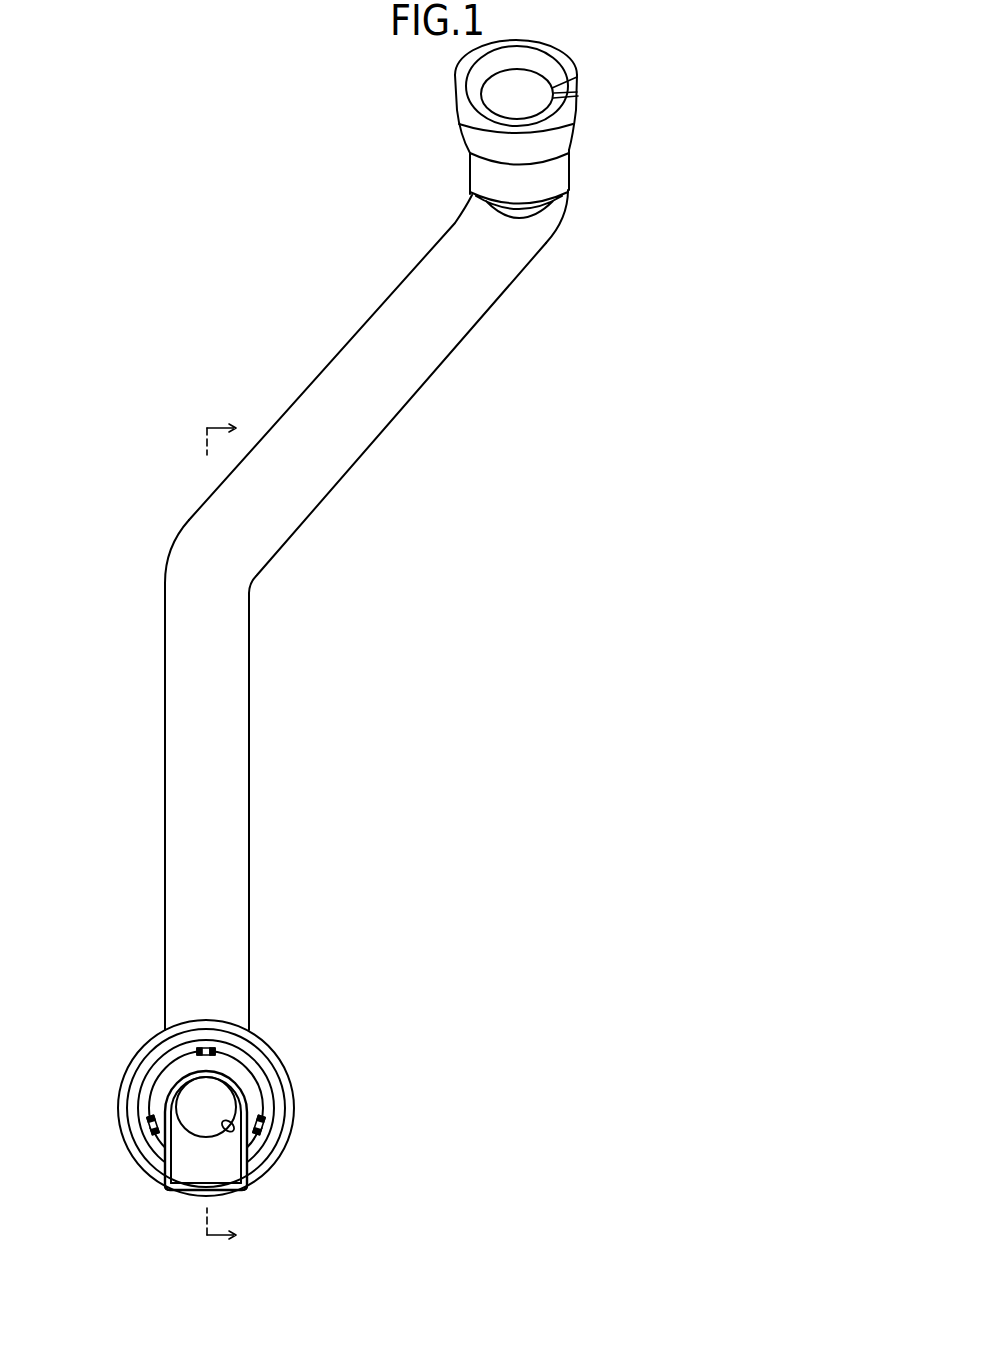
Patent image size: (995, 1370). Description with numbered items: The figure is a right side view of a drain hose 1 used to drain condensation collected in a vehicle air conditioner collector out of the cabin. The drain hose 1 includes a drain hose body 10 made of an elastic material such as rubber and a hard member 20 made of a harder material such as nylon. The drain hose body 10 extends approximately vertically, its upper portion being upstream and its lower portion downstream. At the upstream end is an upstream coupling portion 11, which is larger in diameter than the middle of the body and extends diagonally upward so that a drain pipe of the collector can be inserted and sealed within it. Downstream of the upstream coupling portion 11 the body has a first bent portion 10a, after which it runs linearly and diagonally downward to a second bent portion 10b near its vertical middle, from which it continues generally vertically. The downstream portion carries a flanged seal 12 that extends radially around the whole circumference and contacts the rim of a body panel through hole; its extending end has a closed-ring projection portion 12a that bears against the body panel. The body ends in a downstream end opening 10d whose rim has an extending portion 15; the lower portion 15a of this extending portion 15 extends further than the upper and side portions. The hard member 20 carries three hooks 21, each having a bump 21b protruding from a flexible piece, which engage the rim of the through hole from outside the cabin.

The drain hose 1 is at (360, 230).
The drain hose body 10 is at (375, 438).
The first bent portion 10a is at (557, 228).
The second bent portion 10b is at (170, 554).
The downstream end opening 10d is at (222, 1128).
The upstream coupling portion 11 is at (557, 168).
The seal 12 is at (290, 1138).
The projection portion 12a is at (288, 1090).
The extending portion 15 is at (233, 1073).
The lower portion 15a is at (188, 1170).
The hard member 20 is at (257, 1067).
The hook 21 is at (197, 1043).
The bump 21b is at (210, 1052).